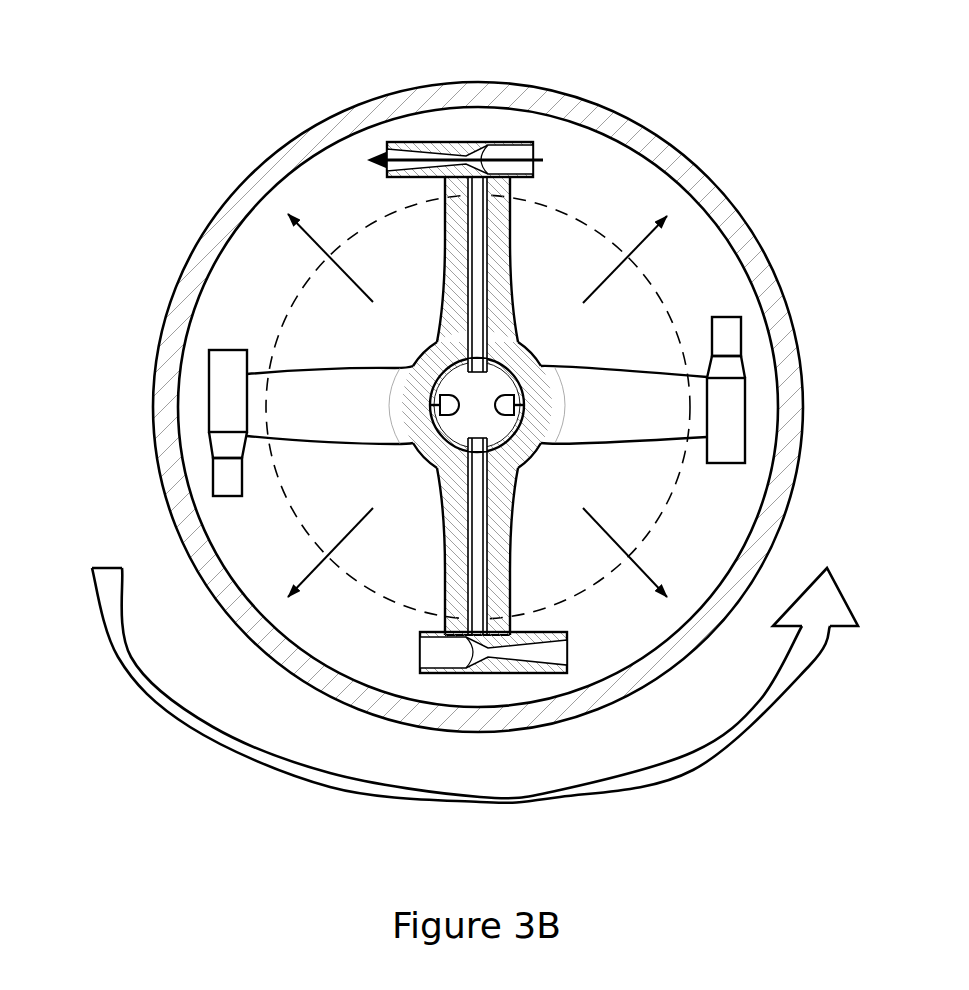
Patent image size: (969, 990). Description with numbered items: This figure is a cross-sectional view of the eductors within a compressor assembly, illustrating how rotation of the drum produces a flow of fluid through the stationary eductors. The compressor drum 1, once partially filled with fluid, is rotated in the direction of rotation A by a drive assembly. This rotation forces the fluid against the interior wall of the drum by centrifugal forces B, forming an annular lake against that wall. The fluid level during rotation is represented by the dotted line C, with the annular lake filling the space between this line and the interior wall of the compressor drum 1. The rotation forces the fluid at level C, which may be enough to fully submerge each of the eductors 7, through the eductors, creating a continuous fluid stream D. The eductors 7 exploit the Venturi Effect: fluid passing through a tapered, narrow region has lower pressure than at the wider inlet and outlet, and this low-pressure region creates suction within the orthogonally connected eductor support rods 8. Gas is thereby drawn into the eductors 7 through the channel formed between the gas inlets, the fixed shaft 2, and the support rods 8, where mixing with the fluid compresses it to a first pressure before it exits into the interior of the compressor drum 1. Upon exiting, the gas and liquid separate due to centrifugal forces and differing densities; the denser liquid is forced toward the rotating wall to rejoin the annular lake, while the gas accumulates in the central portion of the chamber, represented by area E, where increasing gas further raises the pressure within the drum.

The compressor drum 1 is at (218, 208).
The fixed shaft 2 is at (433, 347).
The eductors 7 is at (488, 158).
The eductor support rods 8 is at (500, 227).
The direction of rotation A is at (131, 657).
The centrifugal forces B is at (300, 553).
The fluid level C is at (277, 332).
The continuous fluid stream D is at (398, 155).
The central portion area E is at (640, 323).